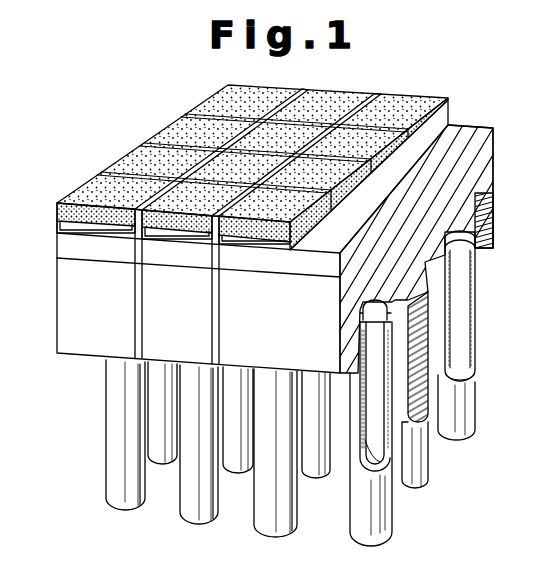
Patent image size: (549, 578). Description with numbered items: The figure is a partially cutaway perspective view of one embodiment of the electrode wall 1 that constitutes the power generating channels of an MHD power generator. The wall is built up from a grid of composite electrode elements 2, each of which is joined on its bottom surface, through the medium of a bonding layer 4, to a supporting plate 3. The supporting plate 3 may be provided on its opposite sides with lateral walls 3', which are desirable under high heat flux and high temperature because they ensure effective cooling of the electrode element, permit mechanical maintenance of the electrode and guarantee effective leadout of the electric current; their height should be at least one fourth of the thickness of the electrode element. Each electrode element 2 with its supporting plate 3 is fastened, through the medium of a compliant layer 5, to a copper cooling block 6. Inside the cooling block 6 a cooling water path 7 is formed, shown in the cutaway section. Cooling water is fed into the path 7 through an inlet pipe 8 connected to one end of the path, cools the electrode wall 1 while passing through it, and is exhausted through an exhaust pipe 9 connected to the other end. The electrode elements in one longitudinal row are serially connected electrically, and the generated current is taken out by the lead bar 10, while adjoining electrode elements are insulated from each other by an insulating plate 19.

The electrode wall 1 is at (377, 106).
The composite electrode element 2 is at (217, 100).
The supporting plate 3 is at (77, 237).
The lateral walls 3' is at (216, 271).
The bonding layer 4 is at (76, 204).
The compliant layer 5 is at (98, 256).
The copper cooling block 6 is at (73, 323).
The cooling water path 7 is at (405, 257).
The inlet pipe 8 is at (372, 458).
The exhaust pipe 9 is at (462, 340).
The lead bar 10 is at (421, 452).
The insulating plate 19 is at (136, 336).